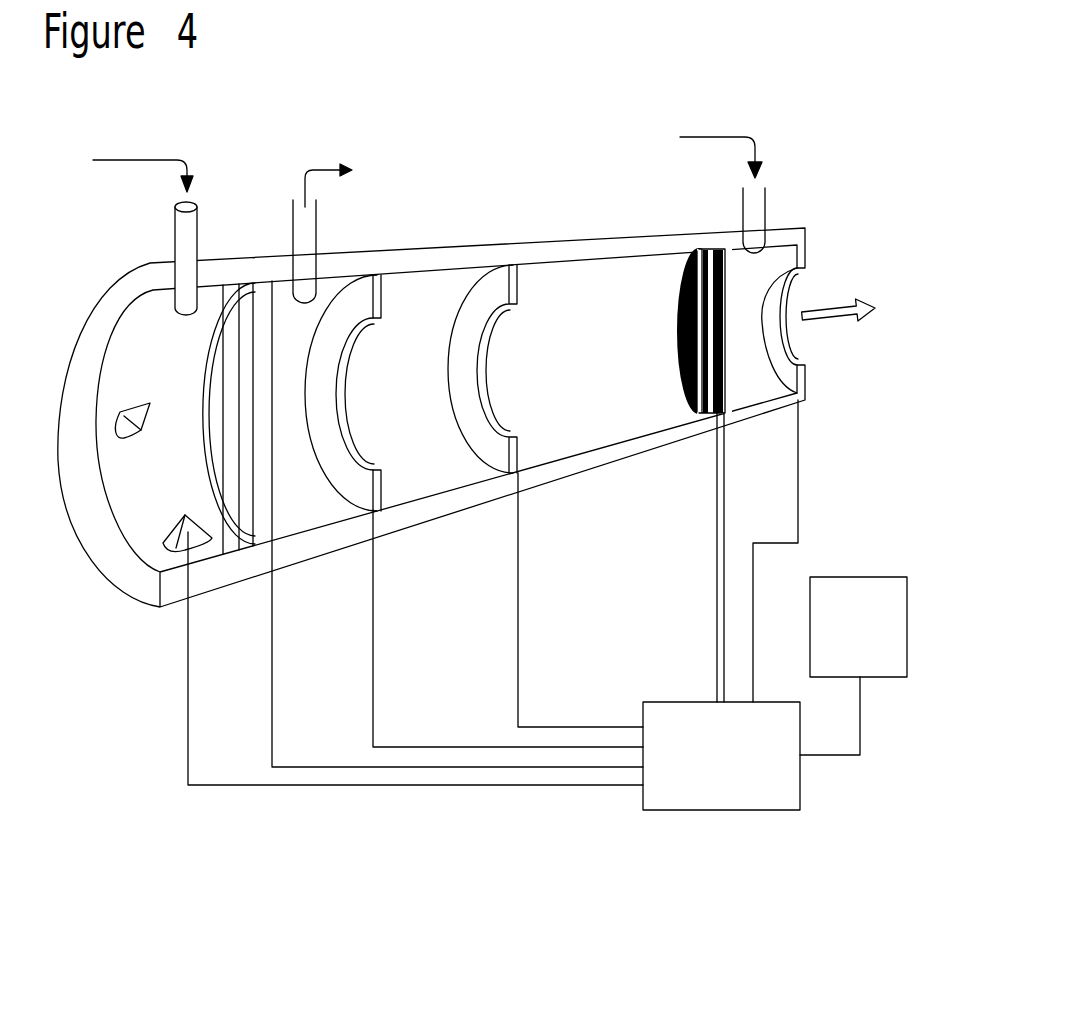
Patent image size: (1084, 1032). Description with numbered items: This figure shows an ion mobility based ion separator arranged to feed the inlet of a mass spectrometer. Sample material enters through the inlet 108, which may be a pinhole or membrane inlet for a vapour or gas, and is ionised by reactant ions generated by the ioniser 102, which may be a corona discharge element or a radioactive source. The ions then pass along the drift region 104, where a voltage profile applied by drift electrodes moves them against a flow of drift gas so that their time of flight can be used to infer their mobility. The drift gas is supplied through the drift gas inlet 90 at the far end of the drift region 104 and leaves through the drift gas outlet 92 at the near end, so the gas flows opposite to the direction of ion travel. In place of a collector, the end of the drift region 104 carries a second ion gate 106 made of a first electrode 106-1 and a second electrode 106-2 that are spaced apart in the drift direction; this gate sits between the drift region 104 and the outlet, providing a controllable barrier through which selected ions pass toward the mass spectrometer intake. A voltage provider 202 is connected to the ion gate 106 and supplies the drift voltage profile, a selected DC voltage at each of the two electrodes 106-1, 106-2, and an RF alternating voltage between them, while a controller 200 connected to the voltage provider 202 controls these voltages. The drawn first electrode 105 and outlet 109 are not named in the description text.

The drift gas inlet 90 is at (764, 202).
The drift gas outlet 92 is at (317, 238).
The ioniser 102 is at (190, 535).
The drift region 104 is at (431, 417).
The first electrode 105 is at (257, 283).
The second ion gate 106 is at (651, 339).
The first electrode 106-1 is at (686, 368).
The second electrode 106-2 is at (643, 275).
The inlet 108 is at (177, 240).
The ion outlet 109 is at (832, 304).
The controller 200 is at (853, 666).
The voltage provider 202 is at (721, 756).